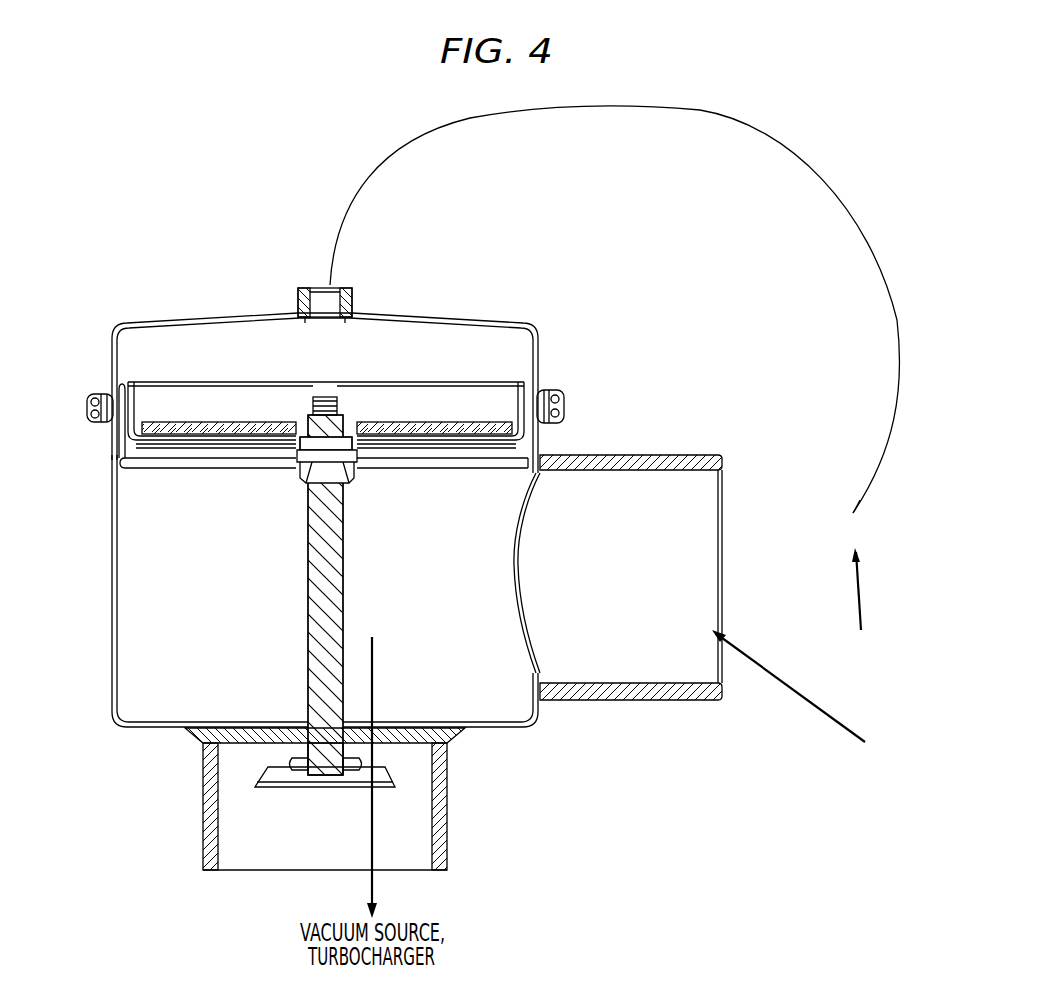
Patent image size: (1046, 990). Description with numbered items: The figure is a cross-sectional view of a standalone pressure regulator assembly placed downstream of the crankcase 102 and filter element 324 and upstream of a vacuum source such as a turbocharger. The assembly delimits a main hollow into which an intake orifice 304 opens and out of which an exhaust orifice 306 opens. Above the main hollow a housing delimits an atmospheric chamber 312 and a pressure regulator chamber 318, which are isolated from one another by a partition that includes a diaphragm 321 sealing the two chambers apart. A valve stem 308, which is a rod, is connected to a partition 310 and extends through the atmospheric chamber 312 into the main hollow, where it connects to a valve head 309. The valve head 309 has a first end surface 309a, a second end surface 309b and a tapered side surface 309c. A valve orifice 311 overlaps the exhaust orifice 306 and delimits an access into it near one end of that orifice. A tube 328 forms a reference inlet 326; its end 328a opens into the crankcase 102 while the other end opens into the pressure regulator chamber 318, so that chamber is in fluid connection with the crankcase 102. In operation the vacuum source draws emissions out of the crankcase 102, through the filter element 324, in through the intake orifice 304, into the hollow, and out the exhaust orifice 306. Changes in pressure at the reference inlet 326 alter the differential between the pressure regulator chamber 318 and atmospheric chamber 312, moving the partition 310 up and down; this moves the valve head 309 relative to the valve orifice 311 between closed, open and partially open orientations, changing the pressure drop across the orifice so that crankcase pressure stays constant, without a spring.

The crankcase 102 is at (880, 684).
The intake orifice 304 is at (722, 508).
The exhaust orifice 306 is at (275, 860).
The valve stem 308 is at (346, 537).
The valve head 309 is at (248, 803).
The first end surface 309a is at (292, 757).
The second end surface 309b is at (302, 790).
The tapered side surface 309c is at (387, 770).
The partition 310 is at (168, 392).
The valve orifice 311 is at (137, 590).
The atmospheric chamber 312 is at (118, 457).
The pressure regulator chamber 318 is at (508, 330).
The diaphragm 321 is at (539, 395).
The filter element 324 is at (838, 514).
The reference inlet 326 is at (870, 506).
The tube 328 is at (812, 135).
The tube end 328a is at (326, 265).